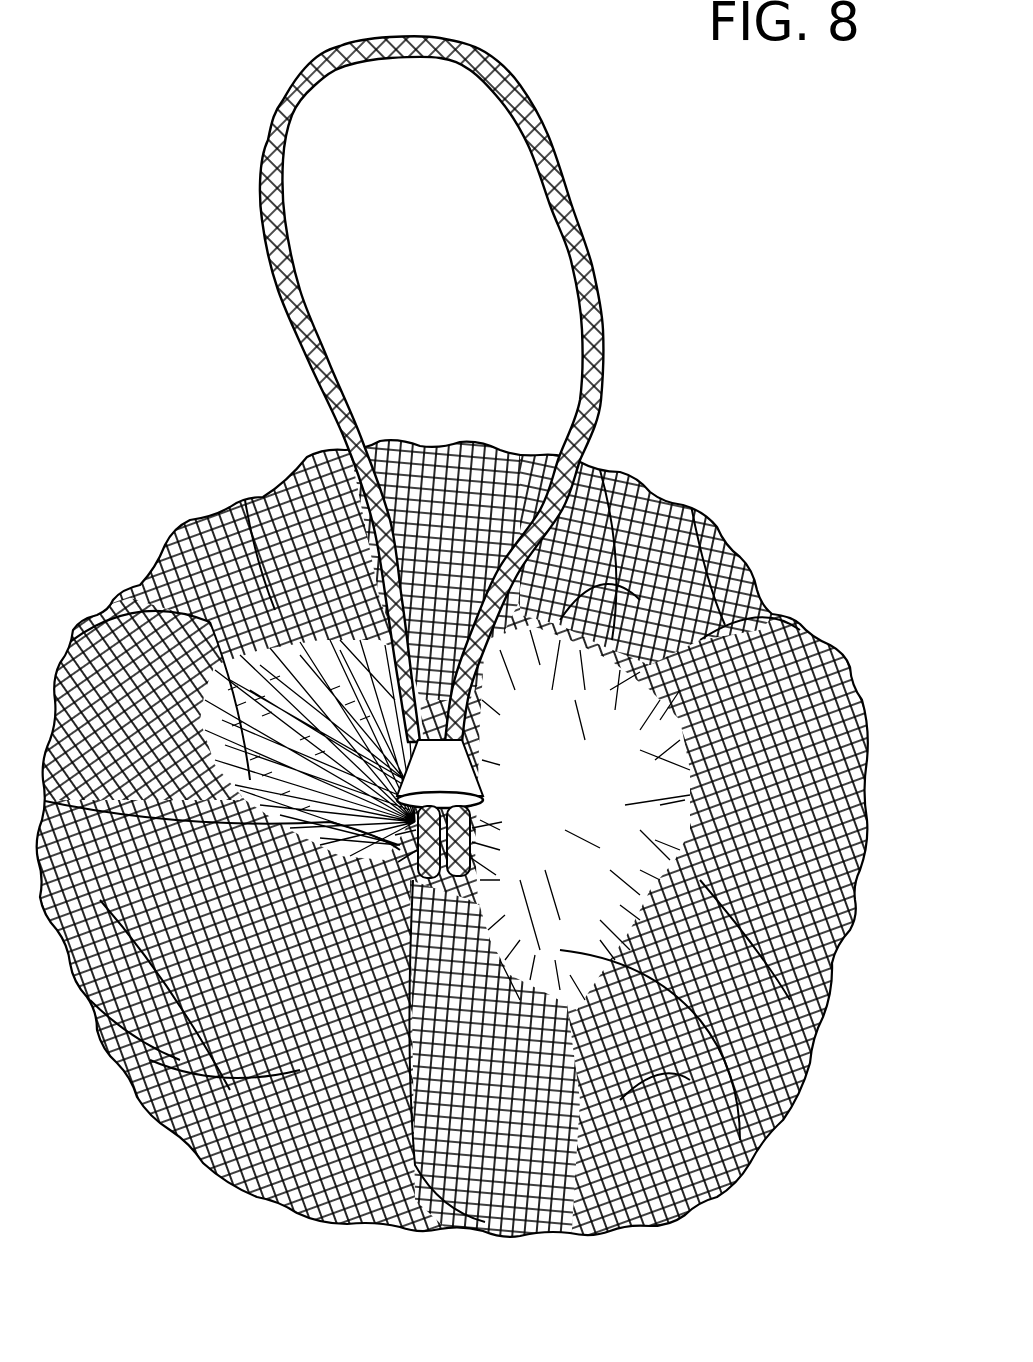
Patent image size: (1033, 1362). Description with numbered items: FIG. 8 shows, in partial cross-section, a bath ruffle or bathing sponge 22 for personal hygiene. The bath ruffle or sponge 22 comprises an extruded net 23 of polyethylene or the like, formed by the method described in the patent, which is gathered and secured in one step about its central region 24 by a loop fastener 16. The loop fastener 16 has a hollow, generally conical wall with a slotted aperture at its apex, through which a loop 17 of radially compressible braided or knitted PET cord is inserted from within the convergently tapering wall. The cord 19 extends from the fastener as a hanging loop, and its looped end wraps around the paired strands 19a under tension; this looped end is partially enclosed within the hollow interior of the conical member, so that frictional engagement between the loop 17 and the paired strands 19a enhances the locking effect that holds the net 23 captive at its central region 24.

The loop fastener 16 is at (448, 788).
The loop 17 is at (477, 817).
The hanging loop cord 19 is at (272, 222).
The paired strands 19a is at (487, 871).
The bath ruffle or bathing sponge 22 is at (516, 850).
The extruded net 23 is at (700, 522).
The central region 24 is at (472, 843).